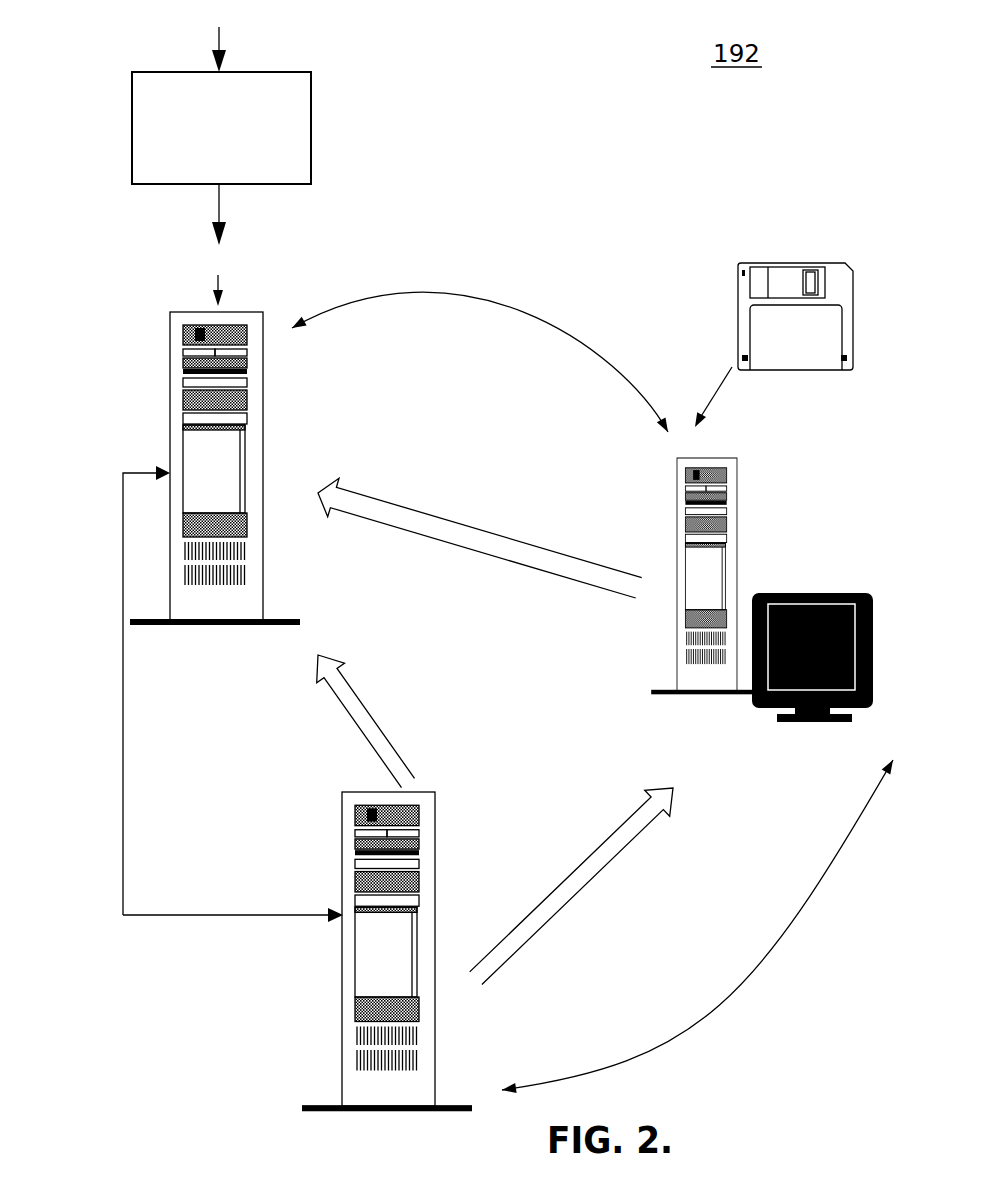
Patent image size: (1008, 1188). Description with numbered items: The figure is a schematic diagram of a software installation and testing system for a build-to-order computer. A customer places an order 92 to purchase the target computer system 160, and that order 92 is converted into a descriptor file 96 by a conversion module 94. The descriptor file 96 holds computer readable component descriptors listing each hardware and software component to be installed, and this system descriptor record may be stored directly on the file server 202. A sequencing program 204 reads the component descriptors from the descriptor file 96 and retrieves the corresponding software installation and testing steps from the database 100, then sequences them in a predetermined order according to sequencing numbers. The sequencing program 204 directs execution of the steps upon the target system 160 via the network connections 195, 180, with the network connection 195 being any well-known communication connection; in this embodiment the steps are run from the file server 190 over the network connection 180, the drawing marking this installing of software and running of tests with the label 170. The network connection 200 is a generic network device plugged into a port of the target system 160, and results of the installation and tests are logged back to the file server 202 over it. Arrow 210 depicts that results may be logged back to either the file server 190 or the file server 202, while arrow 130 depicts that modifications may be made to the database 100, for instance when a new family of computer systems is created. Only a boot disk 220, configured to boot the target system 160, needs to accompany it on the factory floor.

The order 92 is at (260, 20).
The conversion module 94 is at (311, 133).
The descriptor file 96 is at (310, 248).
The database 100 is at (263, 385).
The arrow 130 is at (378, 720).
The target computer system 160 is at (790, 591).
The install software / run tests 170 is at (632, 889).
The network connection 180 is at (772, 960).
The file server 190 is at (343, 810).
The network connection 195 is at (123, 713).
The network connection 200 is at (480, 323).
The file server 202 is at (171, 378).
The sequencing program 204 is at (243, 478).
The arrow 210 is at (425, 531).
The boot disk 220 is at (812, 357).